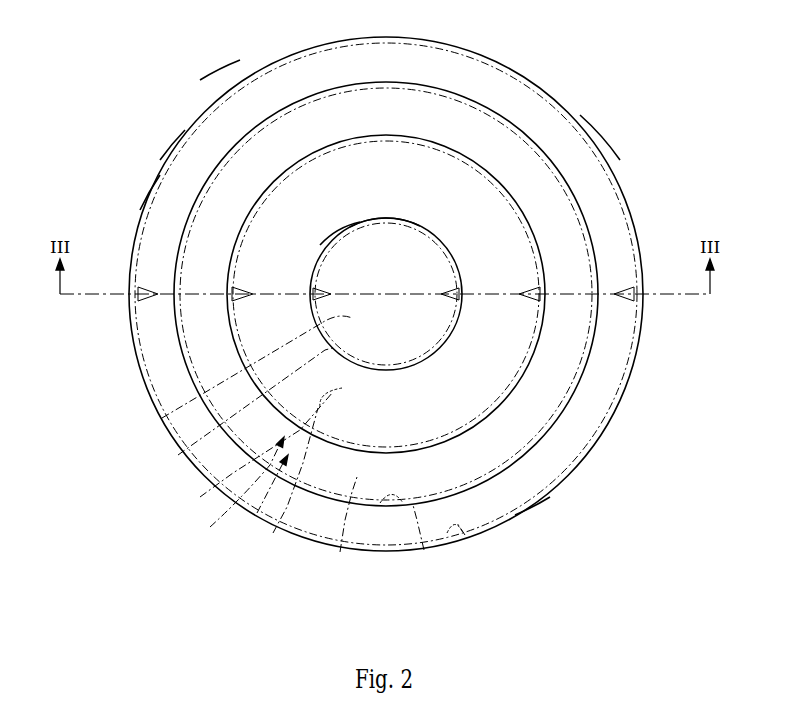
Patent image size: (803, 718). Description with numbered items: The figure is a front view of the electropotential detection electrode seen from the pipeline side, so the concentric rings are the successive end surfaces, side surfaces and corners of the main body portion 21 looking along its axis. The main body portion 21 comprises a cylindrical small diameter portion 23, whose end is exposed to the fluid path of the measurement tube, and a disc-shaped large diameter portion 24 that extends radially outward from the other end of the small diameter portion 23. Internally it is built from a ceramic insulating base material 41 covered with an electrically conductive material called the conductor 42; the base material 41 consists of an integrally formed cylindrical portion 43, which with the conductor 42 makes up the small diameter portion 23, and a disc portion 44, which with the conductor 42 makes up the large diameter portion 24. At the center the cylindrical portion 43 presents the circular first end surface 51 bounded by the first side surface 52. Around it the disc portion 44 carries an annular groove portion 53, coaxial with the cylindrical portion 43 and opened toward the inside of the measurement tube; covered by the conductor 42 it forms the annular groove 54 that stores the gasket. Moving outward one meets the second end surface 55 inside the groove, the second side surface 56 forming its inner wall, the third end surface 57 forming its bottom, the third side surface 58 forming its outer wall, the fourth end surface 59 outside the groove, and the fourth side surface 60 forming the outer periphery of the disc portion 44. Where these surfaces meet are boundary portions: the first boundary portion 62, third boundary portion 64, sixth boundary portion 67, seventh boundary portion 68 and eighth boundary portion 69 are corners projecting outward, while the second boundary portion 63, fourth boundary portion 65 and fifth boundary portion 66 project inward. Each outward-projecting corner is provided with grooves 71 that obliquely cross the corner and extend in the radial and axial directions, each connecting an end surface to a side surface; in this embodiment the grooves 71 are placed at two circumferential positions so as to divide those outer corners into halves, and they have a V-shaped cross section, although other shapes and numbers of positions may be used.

The main body portion 21 is at (170, 62).
The small diameter portion 23 is at (378, 213).
The large diameter portion 24 is at (220, 97).
The base material 41 is at (110, 138).
The conductor 42 is at (162, 208).
The cylindrical portion 43 is at (347, 230).
The disc portion 44 is at (170, 144).
The first end surface 51 is at (162, 418).
The first side surface 52 is at (178, 455).
The annular groove portion 53 is at (200, 497).
The annular groove 54 is at (210, 527).
The second end surface 55 is at (257, 513).
The second side surface 56 is at (273, 533).
The third end surface 57 is at (340, 552).
The third side surface 58 is at (424, 550).
The fourth end surface 59 is at (465, 535).
The fourth side surface 60 is at (533, 507).
The first boundary portion 62 is at (421, 185).
The second boundary portion 63 is at (406, 208).
The third boundary portion 64 is at (409, 238).
The fourth boundary portion 65 is at (468, 140).
The fifth boundary portion 66 is at (403, 280).
The sixth boundary portion 67 is at (530, 120).
The seventh boundary portion 68 is at (646, 130).
The eighth boundary portion 69 is at (604, 130).
The grooves 71 is at (134, 296).